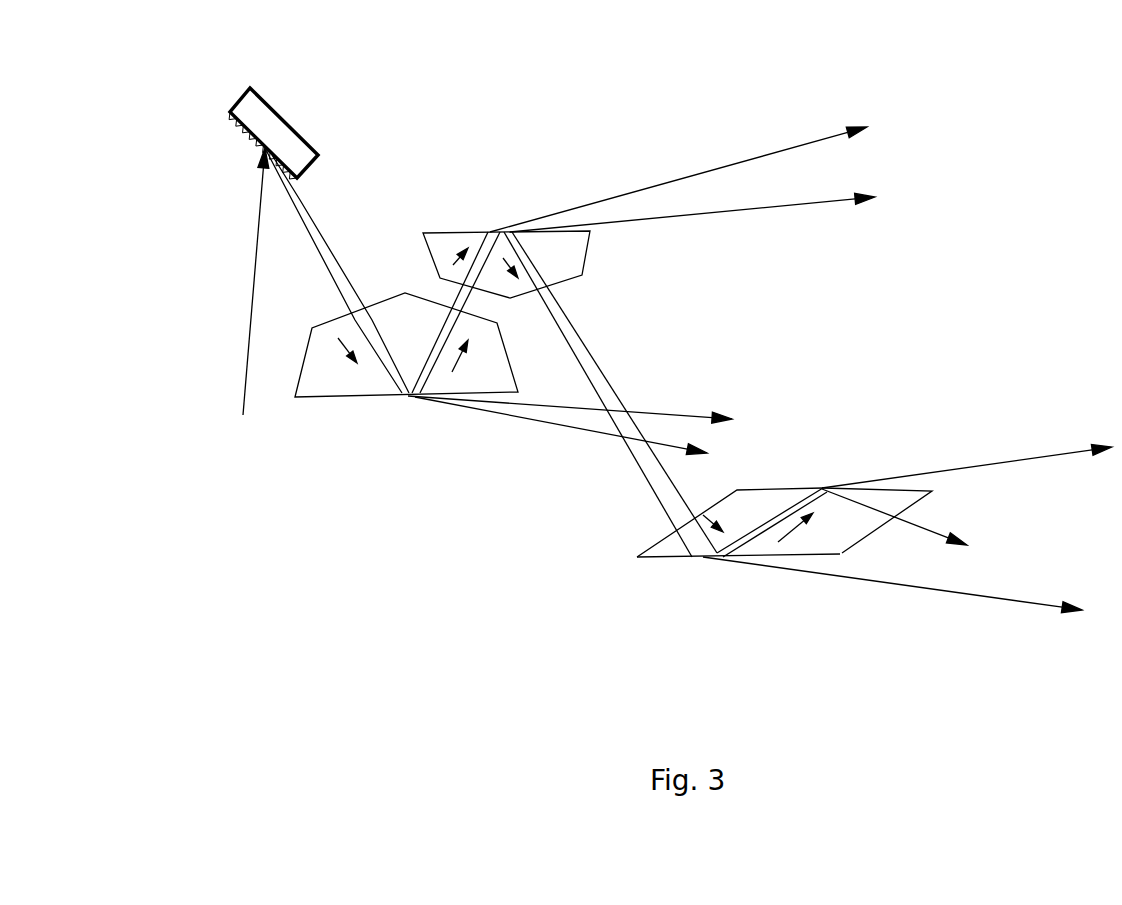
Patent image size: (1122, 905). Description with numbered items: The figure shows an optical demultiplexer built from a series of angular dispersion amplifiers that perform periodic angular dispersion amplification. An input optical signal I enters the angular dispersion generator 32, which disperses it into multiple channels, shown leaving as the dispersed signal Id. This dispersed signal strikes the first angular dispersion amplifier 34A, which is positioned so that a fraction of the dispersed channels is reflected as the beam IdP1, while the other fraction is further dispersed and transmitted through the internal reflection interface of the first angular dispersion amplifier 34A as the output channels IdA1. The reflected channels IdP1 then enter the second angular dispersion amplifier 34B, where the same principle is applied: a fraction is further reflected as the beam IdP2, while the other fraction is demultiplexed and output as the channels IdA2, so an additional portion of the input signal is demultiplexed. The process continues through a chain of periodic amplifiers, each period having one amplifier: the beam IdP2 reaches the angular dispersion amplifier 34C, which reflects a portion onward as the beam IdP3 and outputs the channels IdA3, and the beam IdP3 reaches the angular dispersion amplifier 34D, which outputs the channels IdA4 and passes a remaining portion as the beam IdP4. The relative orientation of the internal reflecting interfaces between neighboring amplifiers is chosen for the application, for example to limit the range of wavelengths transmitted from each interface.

The angular dispersion generator 32 is at (273, 118).
The first angular dispersion amplifier 34A is at (406, 364).
The second angular dispersion amplifier 34B is at (526, 268).
The angular dispersion amplifier 34C is at (737, 545).
The angular dispersion amplifier 34D is at (855, 526).
The incident light I is at (243, 281).
The diffracted light Id is at (337, 271).
The p-polarized component 1 IdP1 is at (452, 312).
The p-polarized component 2 IdP2 is at (610, 394).
The p-polarized component 3 IdP3 is at (772, 522).
The p-polarized component 4 IdP4 is at (913, 526).
The output beam A1 IdA1 is at (584, 425).
The output beam A2 IdA2 is at (699, 167).
The output beam A3 IdA3 is at (892, 597).
The output beam A4 IdA4 is at (967, 460).